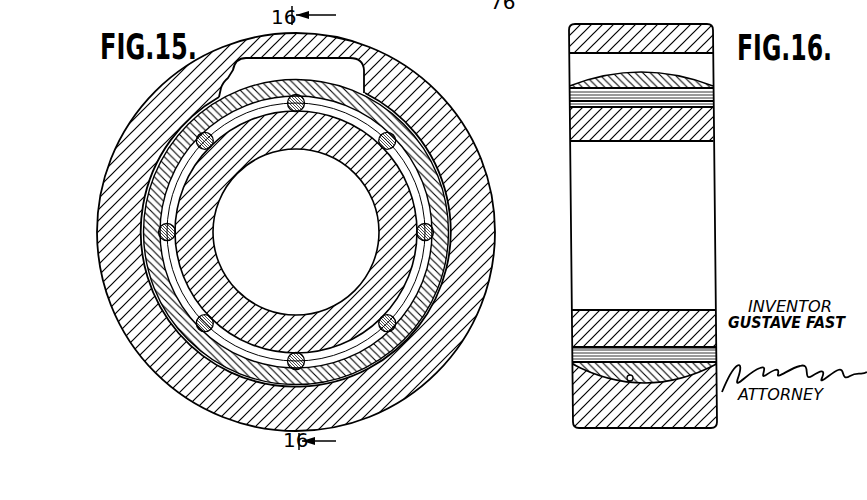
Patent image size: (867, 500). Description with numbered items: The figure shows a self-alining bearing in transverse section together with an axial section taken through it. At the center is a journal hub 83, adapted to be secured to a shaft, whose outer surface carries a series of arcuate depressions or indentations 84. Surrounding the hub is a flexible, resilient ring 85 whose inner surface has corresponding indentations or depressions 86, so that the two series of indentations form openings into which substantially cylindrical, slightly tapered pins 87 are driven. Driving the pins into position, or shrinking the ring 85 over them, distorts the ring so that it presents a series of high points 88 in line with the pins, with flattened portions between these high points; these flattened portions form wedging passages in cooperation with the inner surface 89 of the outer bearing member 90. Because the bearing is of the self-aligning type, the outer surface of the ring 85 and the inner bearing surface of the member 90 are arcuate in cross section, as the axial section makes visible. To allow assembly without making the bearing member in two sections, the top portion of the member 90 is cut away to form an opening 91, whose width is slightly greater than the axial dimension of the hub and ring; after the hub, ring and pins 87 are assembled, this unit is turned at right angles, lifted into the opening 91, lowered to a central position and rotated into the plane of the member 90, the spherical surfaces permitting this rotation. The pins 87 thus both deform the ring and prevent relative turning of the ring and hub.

In FIG. 15, the journal hub 83 is at (332, 148).
In FIG. 16, the journal hub 83 is at (705, 126).
In FIG. 15, the depressions or indentations 84 is at (356, 217).
In FIG. 16, the depressions or indentations 84 is at (644, 100).
In FIG. 15, the flexible, resilient ring 85 is at (338, 95).
In FIG. 16, the flexible, resilient ring 85 is at (682, 79).
In FIG. 15, the indentations or depressions 86 is at (298, 88).
In FIG. 16, the indentations or depressions 86 is at (648, 88).
In FIG. 15, the pins 87 is at (294, 112).
In FIG. 16, the pins 87 is at (702, 97).
In FIG. 15, the high points 88 is at (403, 123).
In FIG. 16, the high points 88 is at (592, 76).
In FIG. 15, the inner surface 89 is at (442, 278).
In FIG. 16, the inner surface 89 is at (630, 380).
In FIG. 15, the bearing member 90 is at (488, 236).
In FIG. 16, the bearing member 90 is at (583, 383).
In FIG. 15, the opening 91 is at (240, 66).
In FIG. 16, the opening 91 is at (580, 60).